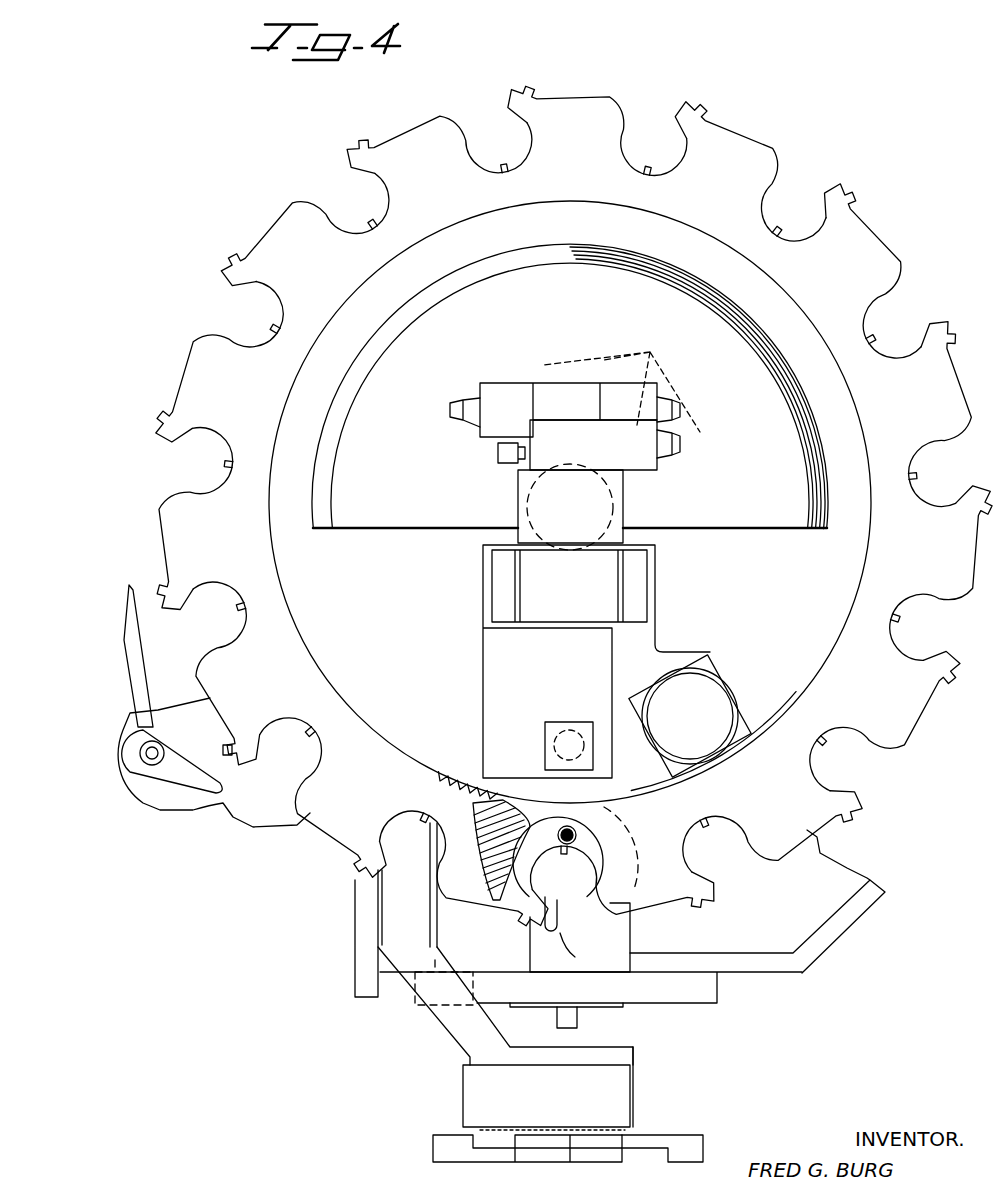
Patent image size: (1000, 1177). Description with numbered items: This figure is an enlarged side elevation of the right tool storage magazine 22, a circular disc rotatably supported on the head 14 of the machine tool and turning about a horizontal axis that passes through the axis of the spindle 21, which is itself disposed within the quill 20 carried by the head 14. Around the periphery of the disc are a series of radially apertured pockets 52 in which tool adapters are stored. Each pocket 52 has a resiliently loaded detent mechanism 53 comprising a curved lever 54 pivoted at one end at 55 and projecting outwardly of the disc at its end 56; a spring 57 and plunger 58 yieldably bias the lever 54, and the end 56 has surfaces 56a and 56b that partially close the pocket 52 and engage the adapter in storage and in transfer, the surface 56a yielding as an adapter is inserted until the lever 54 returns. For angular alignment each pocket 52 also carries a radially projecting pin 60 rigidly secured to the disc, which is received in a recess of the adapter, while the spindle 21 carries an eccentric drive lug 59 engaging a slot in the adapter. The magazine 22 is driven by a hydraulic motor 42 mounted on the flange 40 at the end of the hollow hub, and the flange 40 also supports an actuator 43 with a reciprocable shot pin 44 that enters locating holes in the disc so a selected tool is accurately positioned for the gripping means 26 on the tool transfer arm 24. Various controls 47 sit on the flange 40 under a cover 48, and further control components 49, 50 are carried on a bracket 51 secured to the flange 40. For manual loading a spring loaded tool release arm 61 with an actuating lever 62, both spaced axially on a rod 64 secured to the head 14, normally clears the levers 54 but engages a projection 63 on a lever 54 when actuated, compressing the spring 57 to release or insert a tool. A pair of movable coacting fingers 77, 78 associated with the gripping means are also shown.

The head 14 is at (282, 813).
The quill 20 is at (703, 990).
The spindle 21 is at (620, 1007).
The first tool storage magazine 22 is at (737, 156).
The tool transfer arm 24 is at (457, 1023).
The gripping means 26 is at (646, 1099).
The flange 40 is at (424, 664).
The hydraulic motor 42 is at (713, 700).
The actuator 43 is at (548, 730).
The shot pin 44 is at (574, 720).
The controls 47 is at (621, 382).
The cover 48 is at (760, 467).
The control component 49 is at (587, 449).
The control component 50 is at (589, 413).
The bracket 51 is at (623, 483).
The peripheral pocket 52 is at (486, 130).
The detent mechanism 53 is at (548, 870).
The curved lever 54 is at (247, 752).
The pivot 55 is at (576, 835).
The lever end 56 is at (527, 947).
The surface 56a is at (575, 957).
The surface 56b is at (556, 925).
The spring 57 is at (473, 812).
The plunger 58 is at (503, 830).
The drive lug 59 is at (570, 1018).
The radially projecting pin 60 is at (815, 775).
The tool release arm 61 is at (178, 762).
The actuating lever 62 is at (137, 663).
The projection 63 is at (227, 757).
The rod 64 is at (153, 757).
The finger 77 is at (697, 1147).
The finger 78 is at (440, 1147).